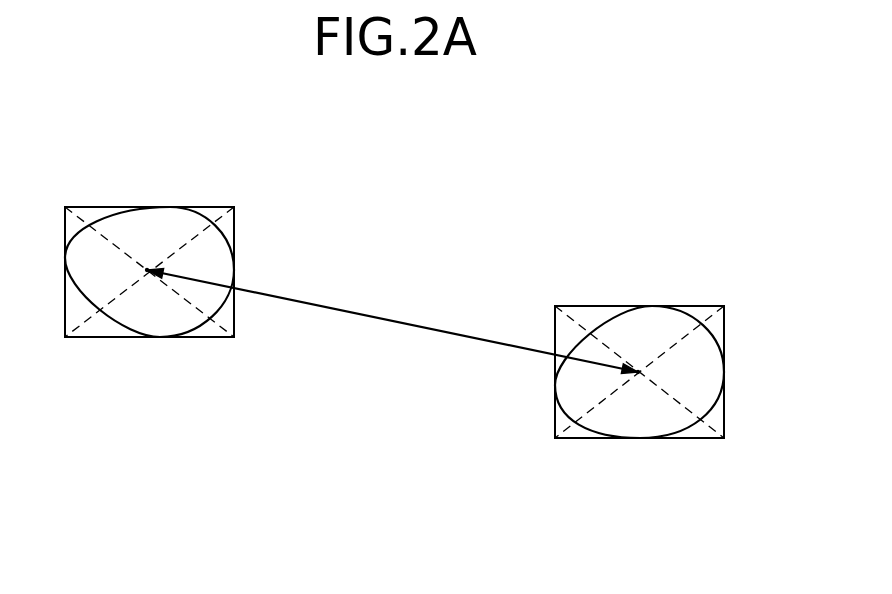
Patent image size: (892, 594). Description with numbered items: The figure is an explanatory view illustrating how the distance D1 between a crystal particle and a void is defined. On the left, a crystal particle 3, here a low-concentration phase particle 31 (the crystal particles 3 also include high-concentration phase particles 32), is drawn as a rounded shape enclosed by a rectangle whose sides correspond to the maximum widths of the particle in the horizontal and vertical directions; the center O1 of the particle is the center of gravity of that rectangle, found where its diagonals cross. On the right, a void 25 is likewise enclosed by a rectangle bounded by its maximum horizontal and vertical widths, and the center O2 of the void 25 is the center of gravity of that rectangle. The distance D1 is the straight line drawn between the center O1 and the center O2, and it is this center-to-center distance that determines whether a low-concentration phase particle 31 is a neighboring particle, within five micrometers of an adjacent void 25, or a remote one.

The low-concentration phase particle 31 is at (164, 217).
The stabilizer high-concentration phase particle 32 is at (164, 217).
The crystal particle 3 is at (110, 207).
The void 25 is at (682, 307).
The center of crystal particle O1 is at (150, 275).
The center of void O2 is at (638, 372).
The distance D1 is at (383, 322).